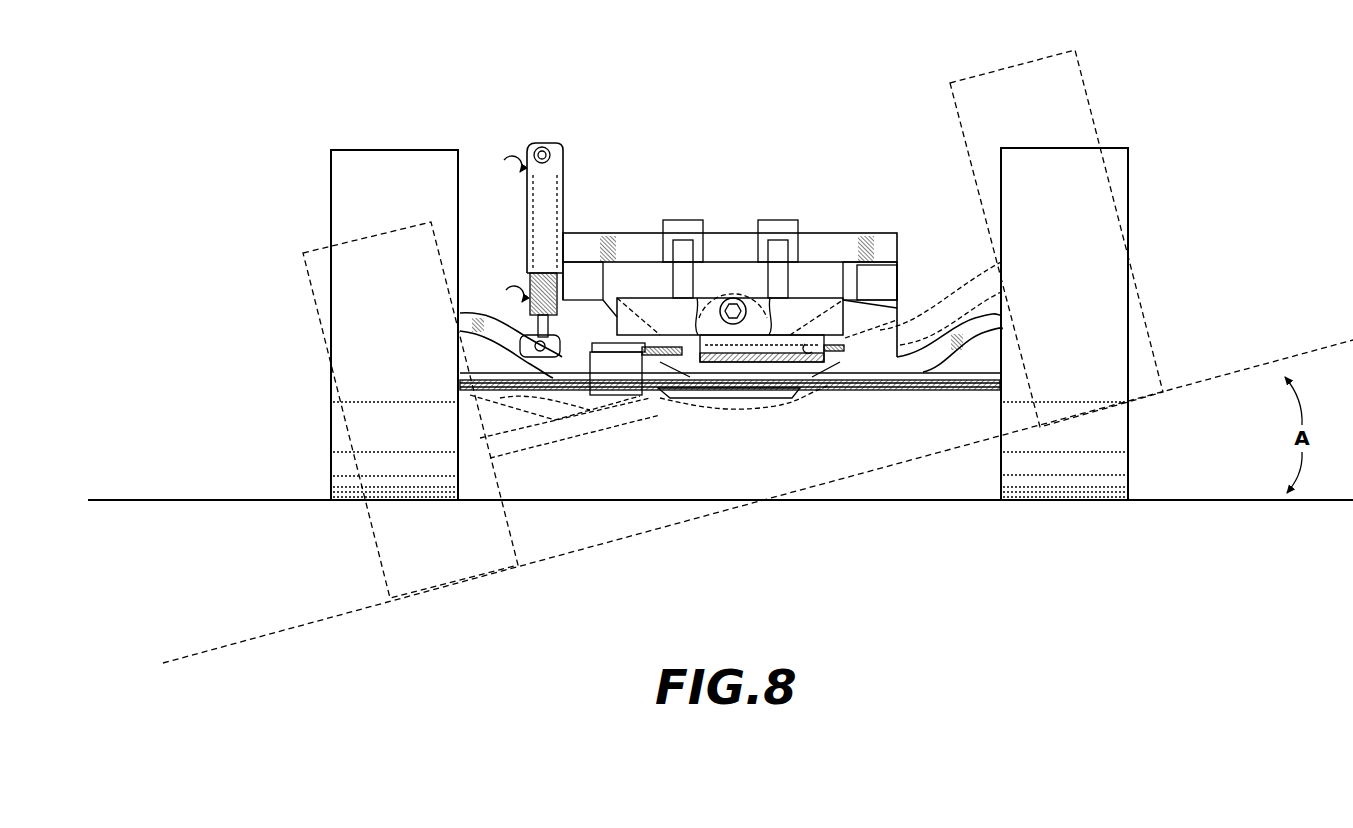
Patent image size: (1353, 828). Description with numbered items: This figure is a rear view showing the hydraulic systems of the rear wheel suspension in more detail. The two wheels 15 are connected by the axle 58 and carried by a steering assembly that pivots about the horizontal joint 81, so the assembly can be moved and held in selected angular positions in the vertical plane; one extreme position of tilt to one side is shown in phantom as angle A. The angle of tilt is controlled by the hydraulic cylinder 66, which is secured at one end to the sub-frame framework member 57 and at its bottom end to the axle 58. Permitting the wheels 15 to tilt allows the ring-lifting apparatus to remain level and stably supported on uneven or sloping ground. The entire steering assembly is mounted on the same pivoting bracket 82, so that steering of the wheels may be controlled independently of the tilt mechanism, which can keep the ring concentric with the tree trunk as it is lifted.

The wheels 15 is at (391, 342).
The sub-frame framework member 57 is at (722, 248).
The axle 58 is at (474, 323).
The hydraulic cylinder 66 is at (543, 178).
The horizontal joint 81 is at (735, 305).
The pivoting bracket 82 is at (806, 310).